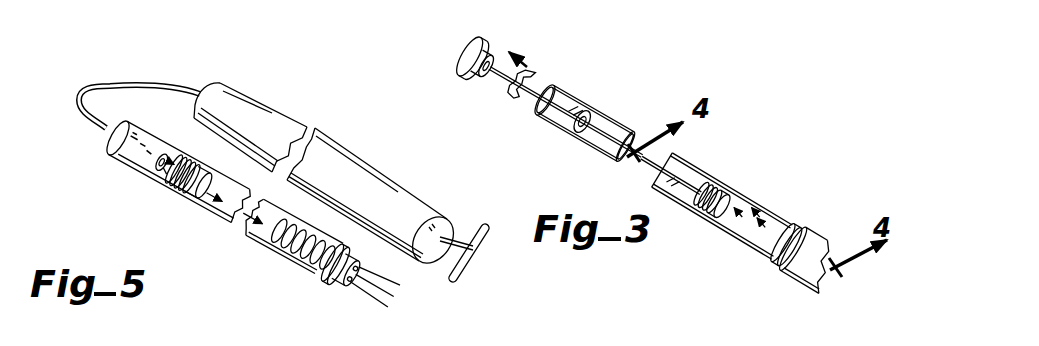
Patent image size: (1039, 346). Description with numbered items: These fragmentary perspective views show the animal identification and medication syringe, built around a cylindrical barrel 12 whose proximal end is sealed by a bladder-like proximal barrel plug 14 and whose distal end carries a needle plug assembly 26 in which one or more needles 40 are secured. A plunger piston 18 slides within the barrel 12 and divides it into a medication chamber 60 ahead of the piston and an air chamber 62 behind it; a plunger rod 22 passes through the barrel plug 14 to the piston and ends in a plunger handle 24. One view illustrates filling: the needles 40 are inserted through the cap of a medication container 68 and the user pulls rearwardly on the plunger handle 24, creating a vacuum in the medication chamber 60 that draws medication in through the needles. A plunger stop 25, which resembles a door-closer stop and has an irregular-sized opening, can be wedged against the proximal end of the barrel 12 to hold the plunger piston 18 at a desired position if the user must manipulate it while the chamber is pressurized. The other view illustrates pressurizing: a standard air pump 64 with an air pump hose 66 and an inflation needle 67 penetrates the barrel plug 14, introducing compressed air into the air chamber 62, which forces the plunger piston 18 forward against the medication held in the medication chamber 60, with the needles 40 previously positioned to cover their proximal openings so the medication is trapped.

In FIG. 5, the cylindrical barrel 12 is at (253, 238).
In FIG. 3, the cylindrical barrel 12 is at (607, 110).
In FIG. 5, the proximal barrel plug 14 is at (137, 170).
In FIG. 3, the proximal barrel plug 14 is at (560, 112).
In FIG. 5, the plunger piston 18 is at (208, 192).
In FIG. 3, the plunger piston 18 is at (702, 222).
In FIG. 3, the plunger rod 22 is at (500, 78).
In FIG. 3, the plunger handle 24 is at (463, 74).
In FIG. 3, the plunger stop 25 is at (520, 104).
In FIG. 5, the needle plug assembly 26 is at (336, 296).
In FIG. 5, the needles 40 is at (410, 292).
In FIG. 5, the medication chamber 60 is at (216, 206).
In FIG. 3, the medication chamber 60 is at (737, 207).
In FIG. 5, the air chamber 62 is at (170, 190).
In FIG. 3, the air chamber 62 is at (687, 173).
In FIG. 5, the air pump 64 is at (297, 66).
In FIG. 5, the air pump hose 66 is at (133, 84).
In FIG. 5, the inflation needle 67 is at (102, 152).
In FIG. 3, the medication container 68 is at (823, 243).